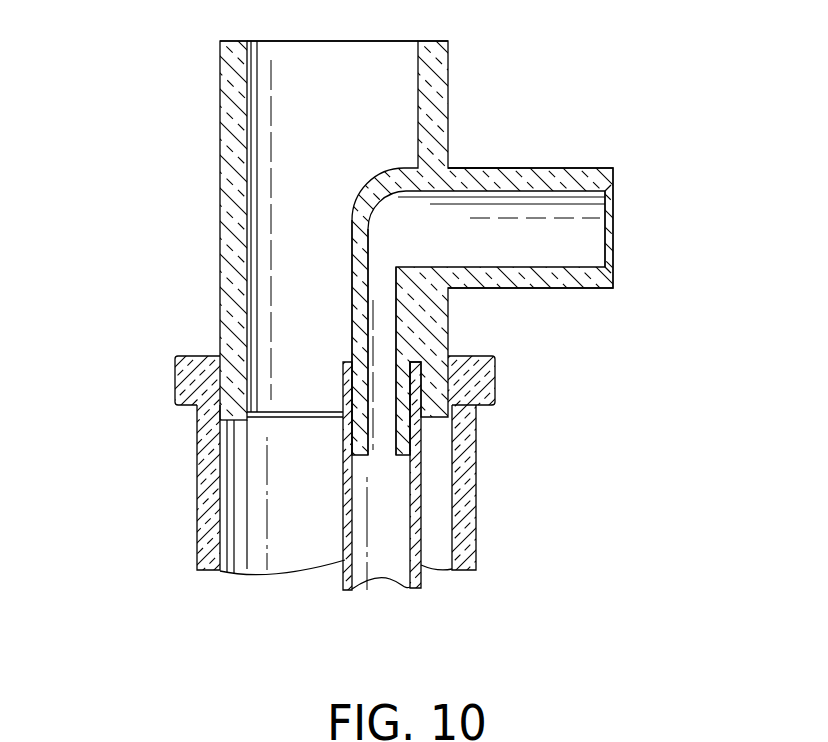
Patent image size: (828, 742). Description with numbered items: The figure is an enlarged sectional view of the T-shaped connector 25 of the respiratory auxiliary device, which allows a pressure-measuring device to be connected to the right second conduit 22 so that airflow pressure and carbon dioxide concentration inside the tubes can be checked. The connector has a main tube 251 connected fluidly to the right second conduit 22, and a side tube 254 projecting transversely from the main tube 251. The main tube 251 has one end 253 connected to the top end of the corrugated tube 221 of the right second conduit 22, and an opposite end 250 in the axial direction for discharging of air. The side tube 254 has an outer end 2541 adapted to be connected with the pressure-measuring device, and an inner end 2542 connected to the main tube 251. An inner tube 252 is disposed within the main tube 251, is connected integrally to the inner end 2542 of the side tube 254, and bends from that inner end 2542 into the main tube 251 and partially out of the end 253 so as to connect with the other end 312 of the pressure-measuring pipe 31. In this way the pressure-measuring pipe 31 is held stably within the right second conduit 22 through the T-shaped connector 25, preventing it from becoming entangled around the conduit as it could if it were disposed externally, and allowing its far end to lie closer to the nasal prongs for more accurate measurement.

The T-shaped connector 25 is at (182, 53).
The other end of the main tube 250 is at (443, 54).
The main tube 251 is at (227, 137).
The inner tube 252 is at (358, 388).
The end of the main tube 253 is at (240, 401).
The side tube 254 is at (557, 172).
The outer end of the side tube 2541 is at (598, 177).
The inner end of the side tube 2542 is at (448, 167).
The right second conduit 22 is at (379, 475).
The corrugated tube 221 is at (467, 513).
The pressure-measuring pipe 31 is at (392, 476).
The other end of the pressure-measuring pipe 312 is at (421, 422).